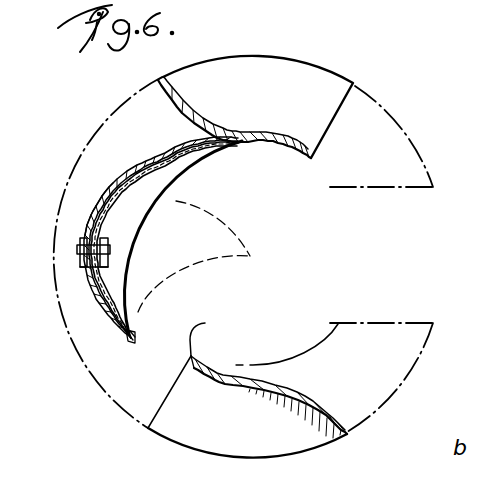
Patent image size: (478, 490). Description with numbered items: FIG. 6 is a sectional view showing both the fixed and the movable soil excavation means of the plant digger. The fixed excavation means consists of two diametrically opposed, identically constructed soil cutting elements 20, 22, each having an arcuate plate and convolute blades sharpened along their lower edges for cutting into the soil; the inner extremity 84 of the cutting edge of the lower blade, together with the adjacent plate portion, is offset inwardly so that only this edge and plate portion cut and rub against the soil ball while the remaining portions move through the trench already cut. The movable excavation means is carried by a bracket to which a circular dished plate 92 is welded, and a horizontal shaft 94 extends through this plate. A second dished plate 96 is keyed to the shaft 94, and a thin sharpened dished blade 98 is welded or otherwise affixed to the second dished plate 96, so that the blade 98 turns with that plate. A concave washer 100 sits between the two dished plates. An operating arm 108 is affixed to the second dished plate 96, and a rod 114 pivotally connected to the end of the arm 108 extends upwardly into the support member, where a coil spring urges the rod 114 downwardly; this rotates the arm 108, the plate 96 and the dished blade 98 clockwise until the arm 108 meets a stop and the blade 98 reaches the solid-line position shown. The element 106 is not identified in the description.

The soil cutting element 20 is at (246, 402).
The soil cutting element 22 is at (297, 87).
The inner extremity of the cutting edge of the lower blade 84 is at (338, 165).
The circular dished plate 92 is at (85, 232).
The horizontal shaft 94 is at (78, 249).
The second dished plate 96 is at (110, 218).
The dished blade 98 is at (140, 162).
The concave washer 100 is at (85, 268).
The band end 106 is at (89, 210).
The operating arm 108 is at (194, 256).
The rod 114 is at (137, 332).